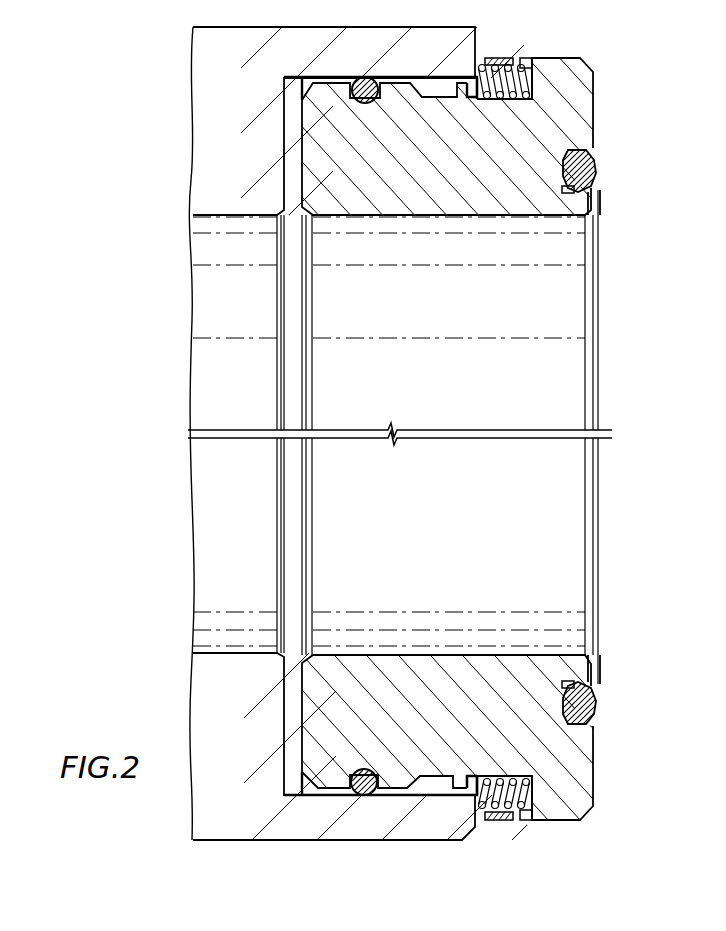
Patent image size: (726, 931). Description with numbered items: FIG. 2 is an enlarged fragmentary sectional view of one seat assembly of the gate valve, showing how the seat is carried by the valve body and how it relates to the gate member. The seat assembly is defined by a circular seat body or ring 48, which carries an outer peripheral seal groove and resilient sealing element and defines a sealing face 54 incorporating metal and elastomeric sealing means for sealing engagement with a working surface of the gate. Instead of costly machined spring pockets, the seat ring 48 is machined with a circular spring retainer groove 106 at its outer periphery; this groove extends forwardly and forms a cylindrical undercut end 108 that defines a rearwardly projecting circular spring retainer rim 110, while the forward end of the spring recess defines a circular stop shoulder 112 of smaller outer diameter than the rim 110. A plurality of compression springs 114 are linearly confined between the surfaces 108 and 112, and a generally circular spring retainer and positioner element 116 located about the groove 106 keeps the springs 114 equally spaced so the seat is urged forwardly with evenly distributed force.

The seat body or ring 48 is at (343, 665).
The sealing face 54 is at (615, 743).
The spring retainer groove 106 is at (497, 777).
The cylindrical undercut end 108 is at (521, 777).
The spring retainer rim 110 is at (523, 815).
The stop shoulder 112 is at (477, 780).
The compression springs 114 is at (472, 797).
The spring retainer and positioner element 116 is at (497, 821).